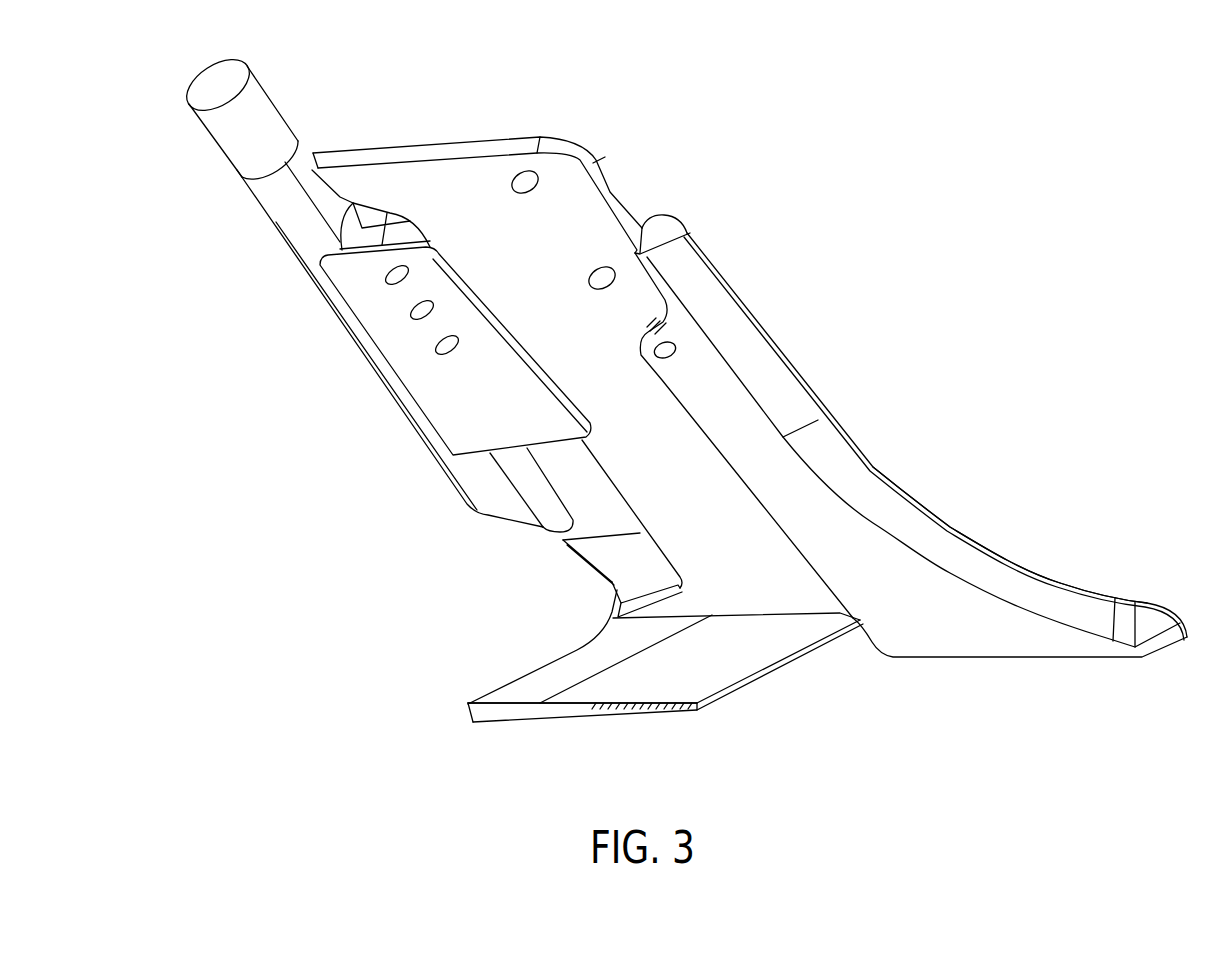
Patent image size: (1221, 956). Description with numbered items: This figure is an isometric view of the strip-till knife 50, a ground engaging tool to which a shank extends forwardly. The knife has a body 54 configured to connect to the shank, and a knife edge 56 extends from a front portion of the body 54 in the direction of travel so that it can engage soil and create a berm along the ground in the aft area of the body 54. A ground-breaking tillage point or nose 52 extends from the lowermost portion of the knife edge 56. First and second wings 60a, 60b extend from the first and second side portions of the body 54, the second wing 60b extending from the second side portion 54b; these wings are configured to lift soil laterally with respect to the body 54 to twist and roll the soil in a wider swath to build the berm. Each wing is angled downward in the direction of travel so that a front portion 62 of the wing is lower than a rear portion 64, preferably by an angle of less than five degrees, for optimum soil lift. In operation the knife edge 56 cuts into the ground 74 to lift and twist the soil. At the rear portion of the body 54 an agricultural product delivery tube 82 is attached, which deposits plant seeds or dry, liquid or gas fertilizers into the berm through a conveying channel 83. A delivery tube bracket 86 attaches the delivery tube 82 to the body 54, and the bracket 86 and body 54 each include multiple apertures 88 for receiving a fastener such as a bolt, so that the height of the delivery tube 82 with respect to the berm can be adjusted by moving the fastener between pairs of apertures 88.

The strip-till knife 50 is at (671, 68).
The nose 52 is at (1152, 622).
The body 54 is at (611, 193).
The second side portion 54b is at (760, 547).
The knife edge 56 is at (918, 498).
The first wing 60a is at (620, 565).
The second wing 60b is at (655, 687).
The front portion of the wing 62 is at (748, 683).
The rear portion of the wing 64 is at (465, 708).
The ground 74 is at (672, 350).
The agricultural product delivery tube 82 is at (247, 426).
The conveying channel 83 is at (245, 128).
The delivery tube bracket 86 is at (433, 403).
The apertures 88 is at (445, 348).